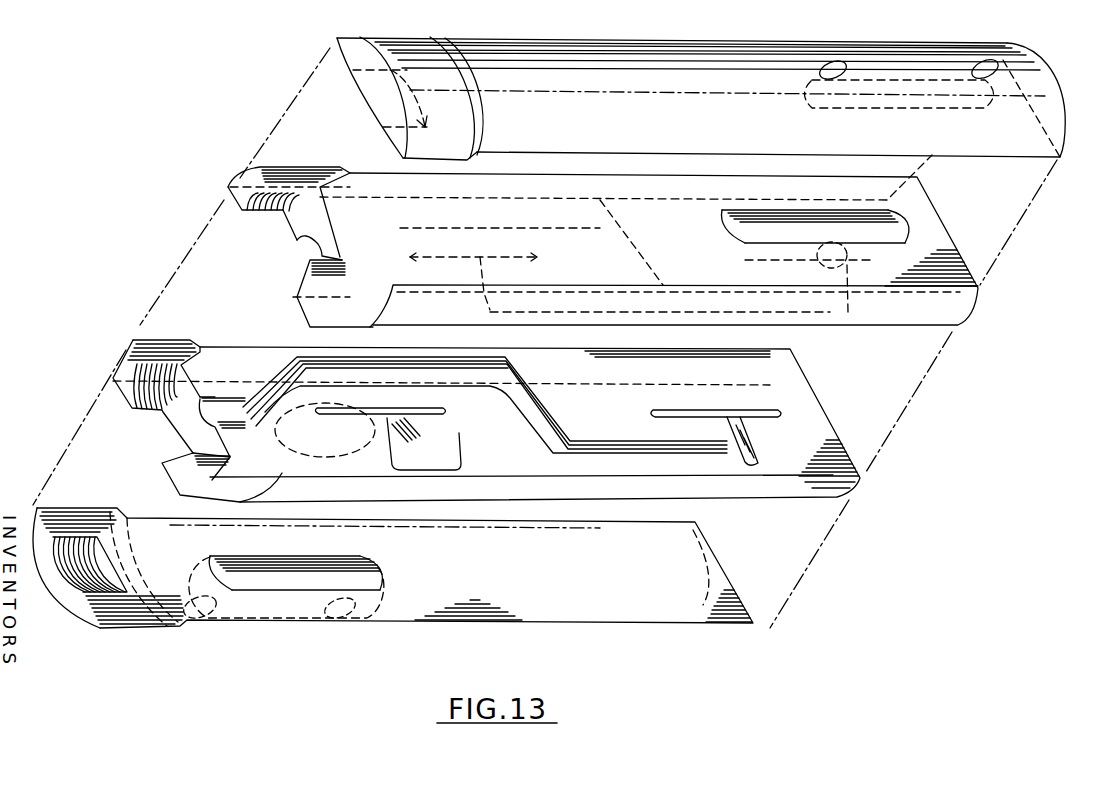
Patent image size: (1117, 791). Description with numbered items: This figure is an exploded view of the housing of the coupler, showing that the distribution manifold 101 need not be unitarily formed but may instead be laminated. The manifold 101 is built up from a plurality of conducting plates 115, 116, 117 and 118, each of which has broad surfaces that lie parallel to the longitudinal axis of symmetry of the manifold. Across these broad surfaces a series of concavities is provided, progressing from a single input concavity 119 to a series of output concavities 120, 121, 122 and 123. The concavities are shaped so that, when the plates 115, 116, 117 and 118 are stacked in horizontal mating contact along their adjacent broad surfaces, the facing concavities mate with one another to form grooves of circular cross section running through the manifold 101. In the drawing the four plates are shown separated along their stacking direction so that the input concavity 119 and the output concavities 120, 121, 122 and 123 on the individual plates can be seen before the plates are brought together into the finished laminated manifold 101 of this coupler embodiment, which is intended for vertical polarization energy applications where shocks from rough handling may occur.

The distribution manifold 101 is at (671, 645).
The conducting plate 115 is at (723, 562).
The conducting plate 116 is at (820, 407).
The conducting plate 117 is at (943, 228).
The conducting plate 118 is at (1047, 67).
The input concavity 119 is at (413, 210).
The output concavity 120 is at (478, 455).
The output concavity 121 is at (690, 457).
The output concavity 122 is at (327, 443).
The output concavity 123 is at (867, 90).